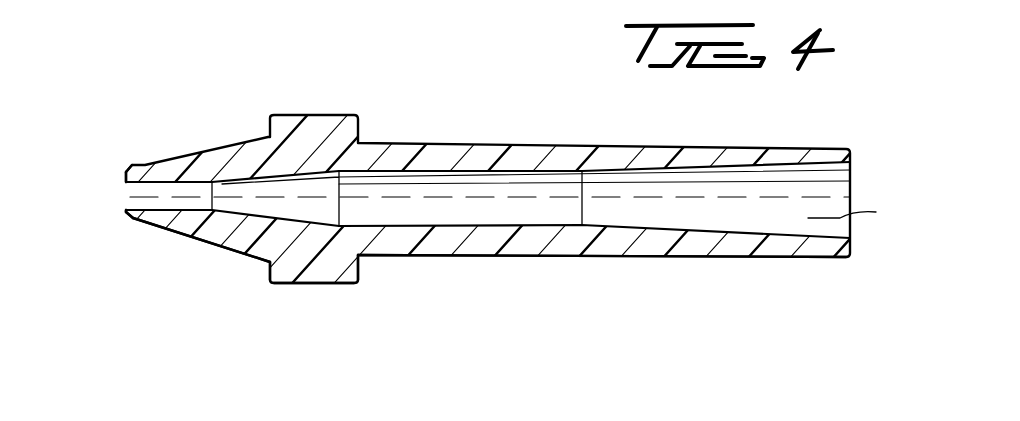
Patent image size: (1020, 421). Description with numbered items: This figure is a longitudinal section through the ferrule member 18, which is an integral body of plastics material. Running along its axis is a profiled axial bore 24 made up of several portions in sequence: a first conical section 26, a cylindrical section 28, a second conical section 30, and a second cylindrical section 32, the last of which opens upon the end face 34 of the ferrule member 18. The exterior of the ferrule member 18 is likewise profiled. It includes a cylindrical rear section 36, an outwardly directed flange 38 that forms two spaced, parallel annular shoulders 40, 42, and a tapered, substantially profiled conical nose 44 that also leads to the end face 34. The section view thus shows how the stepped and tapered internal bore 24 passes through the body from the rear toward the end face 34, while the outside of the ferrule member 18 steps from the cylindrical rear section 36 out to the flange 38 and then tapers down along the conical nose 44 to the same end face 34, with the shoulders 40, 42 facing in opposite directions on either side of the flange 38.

The ferrule member 18 is at (690, 263).
The profiled axial bore 24 is at (857, 213).
The first conical section 26 is at (743, 165).
The cylindrical section 28 is at (442, 188).
The second conical section 30 is at (273, 185).
The second cylindrical section 32 is at (177, 190).
The end face 34 is at (125, 175).
The cylindrical rear section 36 is at (563, 258).
The outwardly directed flange 38 is at (308, 284).
The annular shoulder 40 is at (358, 275).
The annular shoulder 42 is at (268, 279).
The conical nose 44 is at (240, 257).